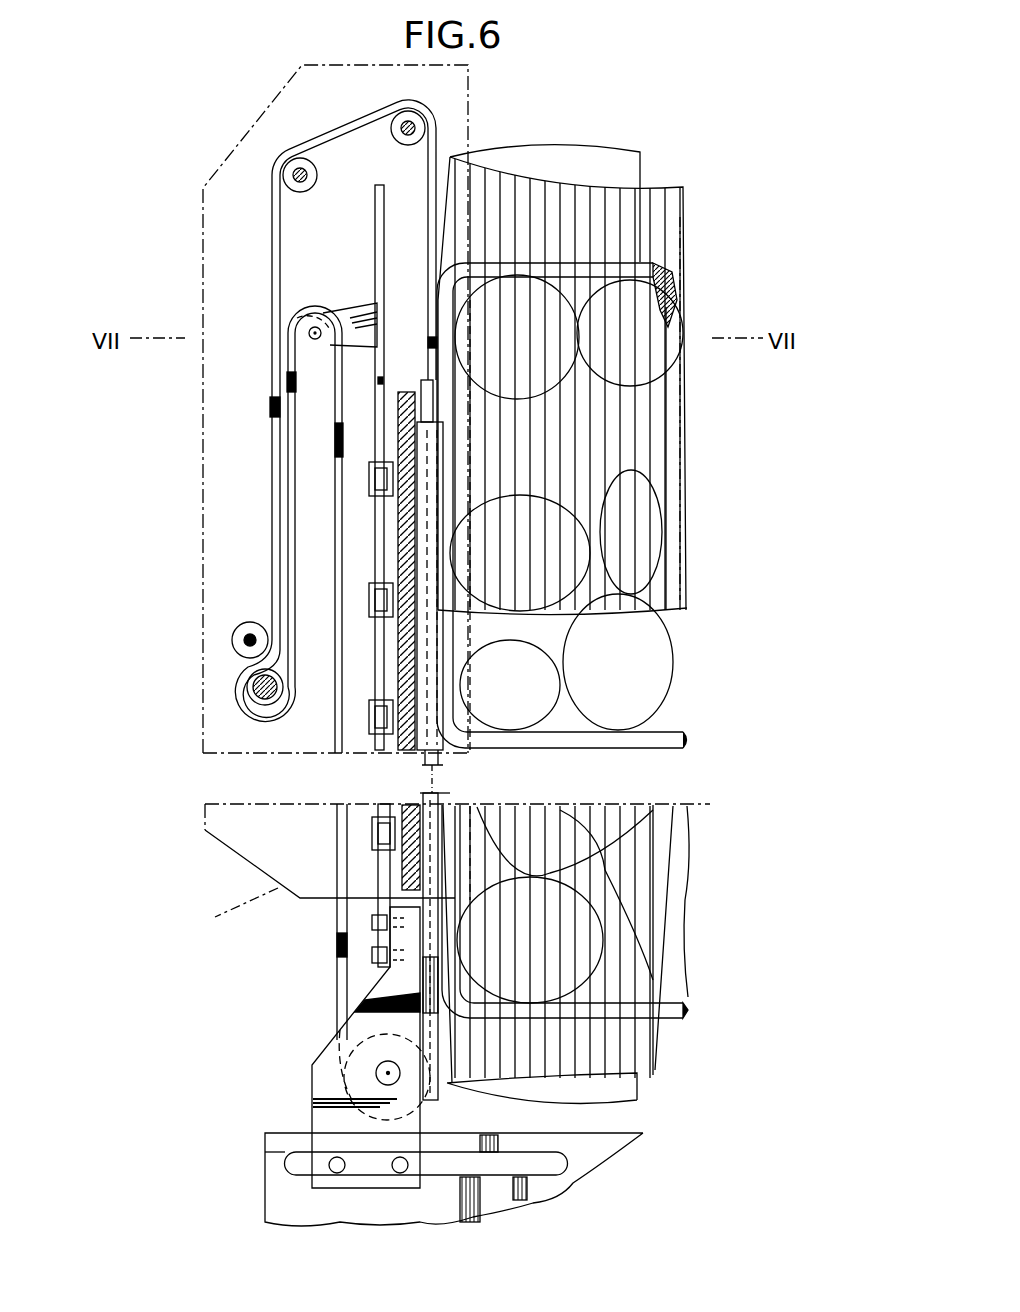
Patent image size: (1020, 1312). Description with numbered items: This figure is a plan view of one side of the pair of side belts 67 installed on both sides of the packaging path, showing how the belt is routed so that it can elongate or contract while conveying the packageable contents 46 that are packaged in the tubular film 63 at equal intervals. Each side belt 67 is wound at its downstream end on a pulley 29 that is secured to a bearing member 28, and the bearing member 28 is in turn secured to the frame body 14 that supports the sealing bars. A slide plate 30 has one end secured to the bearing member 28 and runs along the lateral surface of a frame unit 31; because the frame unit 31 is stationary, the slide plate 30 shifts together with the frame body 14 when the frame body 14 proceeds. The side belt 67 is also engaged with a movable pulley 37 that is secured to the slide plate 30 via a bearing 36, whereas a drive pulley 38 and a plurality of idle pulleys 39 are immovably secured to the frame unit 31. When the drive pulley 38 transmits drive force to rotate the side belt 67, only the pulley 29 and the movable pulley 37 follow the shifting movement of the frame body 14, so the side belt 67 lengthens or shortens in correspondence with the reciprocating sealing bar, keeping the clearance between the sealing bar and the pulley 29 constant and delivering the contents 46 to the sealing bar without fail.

The frame body 14 is at (592, 1160).
The bearing member 28 is at (312, 1090).
The pulley 29 is at (333, 997).
The slide plate 30 is at (375, 570).
The frame unit 31 is at (409, 372).
The bearing 36 is at (355, 300).
The movable pulley 37 is at (310, 372).
The drive pulley 38 is at (250, 697).
The idle pulleys 39 is at (320, 163).
The packageable contents 46 is at (683, 740).
The tubular film 63 is at (673, 187).
The side belts 67 is at (353, 680).